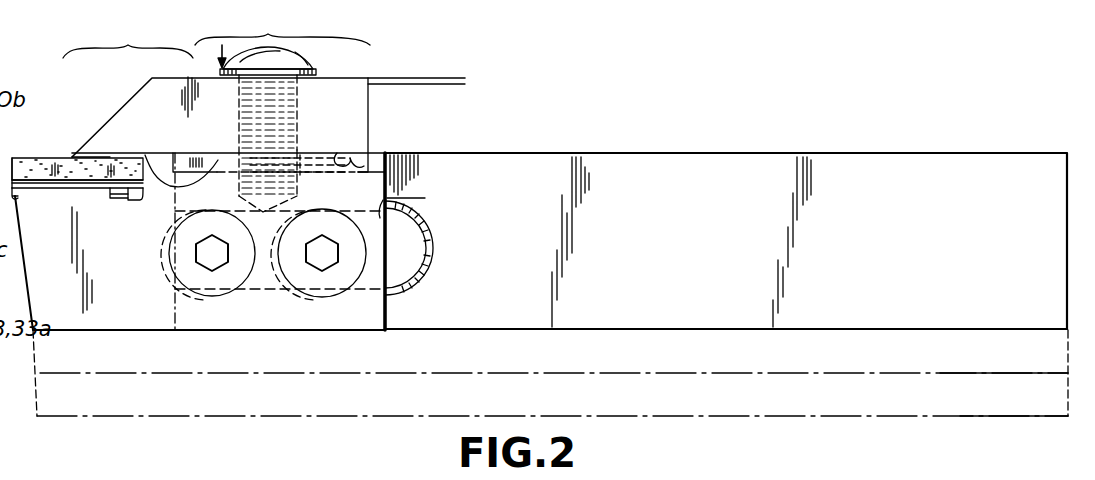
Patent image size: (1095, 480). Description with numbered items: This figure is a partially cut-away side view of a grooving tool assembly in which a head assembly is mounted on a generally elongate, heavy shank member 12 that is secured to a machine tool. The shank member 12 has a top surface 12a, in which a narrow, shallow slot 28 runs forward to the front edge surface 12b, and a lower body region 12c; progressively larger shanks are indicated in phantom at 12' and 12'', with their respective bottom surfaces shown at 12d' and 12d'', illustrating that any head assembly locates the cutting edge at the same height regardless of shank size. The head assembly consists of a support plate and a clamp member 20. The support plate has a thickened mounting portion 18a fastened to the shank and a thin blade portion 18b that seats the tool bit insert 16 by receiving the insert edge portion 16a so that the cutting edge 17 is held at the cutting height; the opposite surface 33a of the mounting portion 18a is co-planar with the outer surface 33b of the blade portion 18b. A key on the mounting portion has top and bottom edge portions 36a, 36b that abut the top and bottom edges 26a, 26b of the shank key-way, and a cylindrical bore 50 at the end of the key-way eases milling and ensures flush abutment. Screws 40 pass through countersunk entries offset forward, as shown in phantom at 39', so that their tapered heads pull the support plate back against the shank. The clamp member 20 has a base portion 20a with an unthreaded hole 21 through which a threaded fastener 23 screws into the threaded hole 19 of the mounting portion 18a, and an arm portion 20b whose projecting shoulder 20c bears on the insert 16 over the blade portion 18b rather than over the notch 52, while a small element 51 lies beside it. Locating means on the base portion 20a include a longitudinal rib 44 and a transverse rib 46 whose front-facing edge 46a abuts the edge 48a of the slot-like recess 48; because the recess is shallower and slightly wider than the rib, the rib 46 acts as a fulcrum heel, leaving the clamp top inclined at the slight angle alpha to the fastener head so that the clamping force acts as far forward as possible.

The shank member 12 is at (726, 211).
The top surface of the shank 12a is at (690, 152).
The front edge surface of the shank 12b is at (912, 332).
The base rail body 12c is at (892, 256).
The progressively larger shank 12' is at (550, 373).
The progressively larger shank 12'' is at (552, 431).
The phantom rail surface 12d' is at (1004, 386).
The phantom rail surface 12d'' is at (1014, 430).
The tool bit insert 16 is at (53, 157).
The edge portion of insert 16a is at (17, 196).
The cutting edge 17 is at (8, 157).
The mounting portion 18a is at (177, 333).
The blade portion 18b is at (35, 333).
The threaded hole 19 is at (245, 180).
The clamp member 20 is at (369, 118).
The base portion 20a is at (282, 30).
The arm portion 20b is at (128, 41).
The shoulder 20c is at (70, 150).
The unthreaded hole 21 is at (240, 115).
The threaded fastener 23 is at (302, 70).
The top edge of key-way 26a is at (365, 202).
The bottom edge of key-way 26b is at (210, 267).
The slot 28 is at (294, 151).
The opposite surface of mounting portion 33a is at (276, 240).
The outer surface of blade portion 33b is at (120, 266).
The top edge portion of key 36a is at (410, 202).
The bottom edge portion of key 36b is at (286, 269).
The offset countersunk entry segment 39' is at (233, 276).
The screw 40 is at (218, 274).
The longitudinal rib 44 is at (188, 160).
The transverse rib 46 is at (369, 170).
The front-facing edge of transverse rib 46a is at (343, 160).
The slot-like recess 48 is at (405, 165).
The edge of recess 48a is at (352, 167).
The cylindrical bore 50 is at (415, 250).
The lip 51 is at (131, 196).
The notch 52 is at (118, 196).
The angle alpha is at (383, 79).